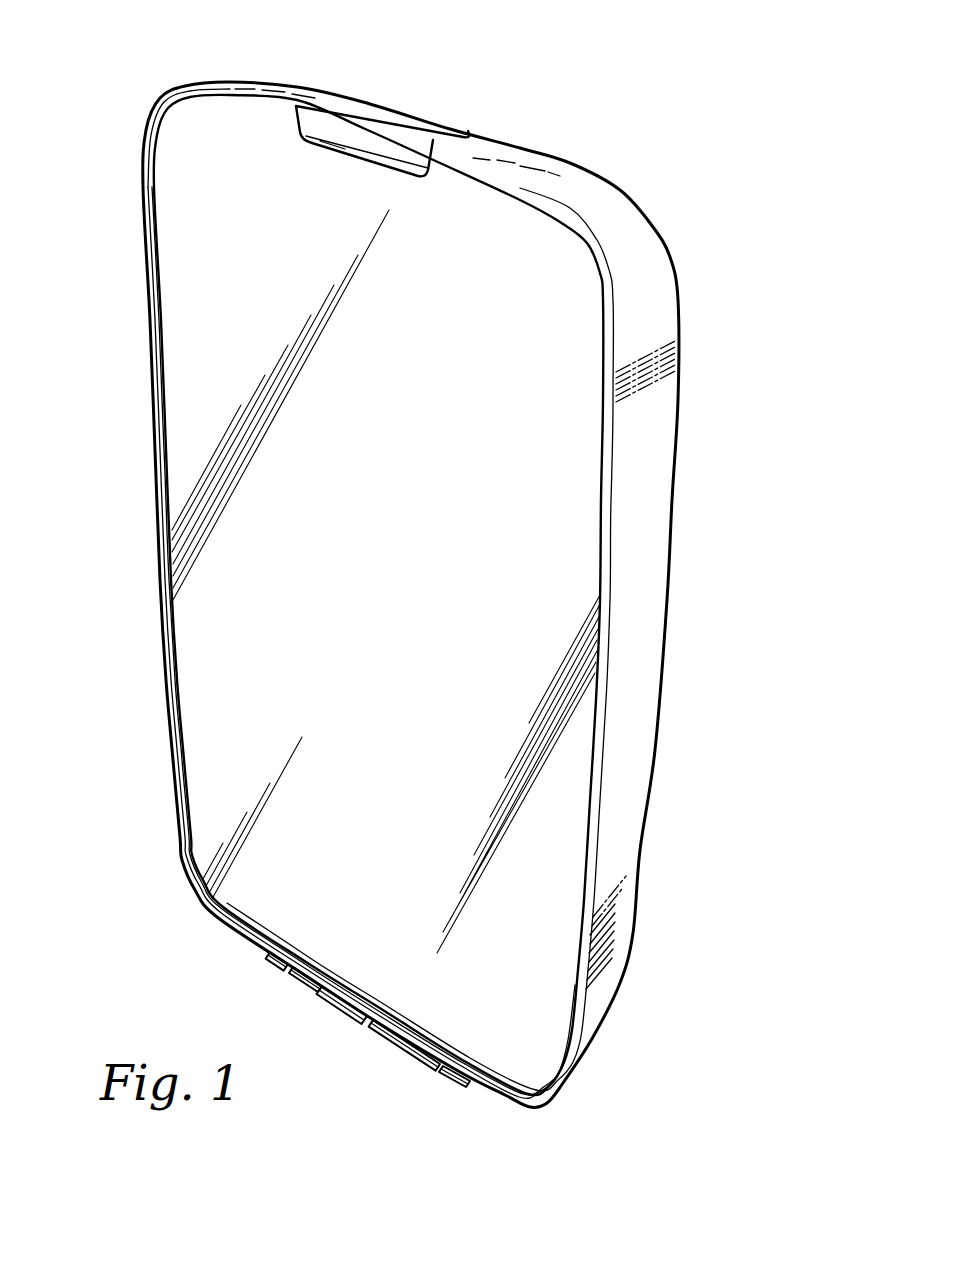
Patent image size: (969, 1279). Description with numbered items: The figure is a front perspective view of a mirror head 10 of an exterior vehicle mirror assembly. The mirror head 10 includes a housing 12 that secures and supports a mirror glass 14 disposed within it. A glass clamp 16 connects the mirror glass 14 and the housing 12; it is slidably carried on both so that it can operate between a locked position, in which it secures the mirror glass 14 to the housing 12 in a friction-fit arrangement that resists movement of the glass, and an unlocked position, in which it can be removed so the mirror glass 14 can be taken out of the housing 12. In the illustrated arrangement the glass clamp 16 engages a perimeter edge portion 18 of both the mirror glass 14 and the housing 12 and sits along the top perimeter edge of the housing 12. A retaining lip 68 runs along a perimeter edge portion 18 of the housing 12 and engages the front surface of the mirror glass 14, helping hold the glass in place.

The mirror head 10 is at (614, 105).
The housing 12 is at (668, 433).
The mirror glass 14 is at (582, 596).
The glass clamp 16 is at (365, 113).
The perimeter edge portion 18 is at (472, 152).
The retaining lip 68 is at (507, 1082).